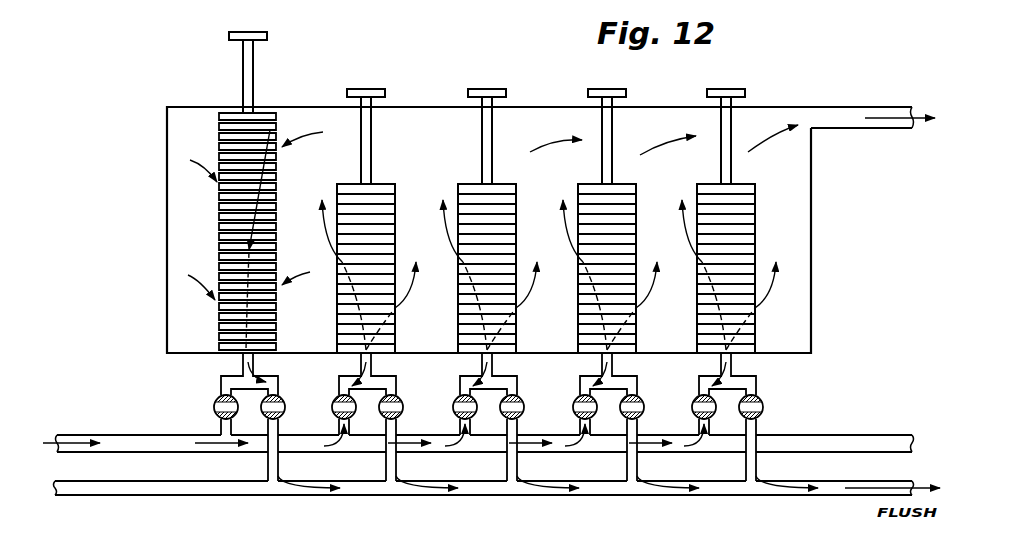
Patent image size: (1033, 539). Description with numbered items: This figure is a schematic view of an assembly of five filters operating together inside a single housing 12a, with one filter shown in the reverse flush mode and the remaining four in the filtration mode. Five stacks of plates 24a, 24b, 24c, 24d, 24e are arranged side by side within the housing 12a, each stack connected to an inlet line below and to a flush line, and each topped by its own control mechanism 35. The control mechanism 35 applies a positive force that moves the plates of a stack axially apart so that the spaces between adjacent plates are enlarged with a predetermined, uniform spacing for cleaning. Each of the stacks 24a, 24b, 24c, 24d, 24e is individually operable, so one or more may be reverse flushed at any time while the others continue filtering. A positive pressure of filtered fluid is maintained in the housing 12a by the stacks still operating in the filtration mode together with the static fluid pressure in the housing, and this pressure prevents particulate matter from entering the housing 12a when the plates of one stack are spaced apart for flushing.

The housing 12a is at (166, 155).
The control mechanism 35 is at (253, 70).
The stack of plates 24a is at (216, 210).
The stack of plates 24b is at (335, 191).
The stack of plates 24c is at (457, 262).
The stack of plates 24d is at (576, 266).
The stack of plates 24e is at (695, 266).